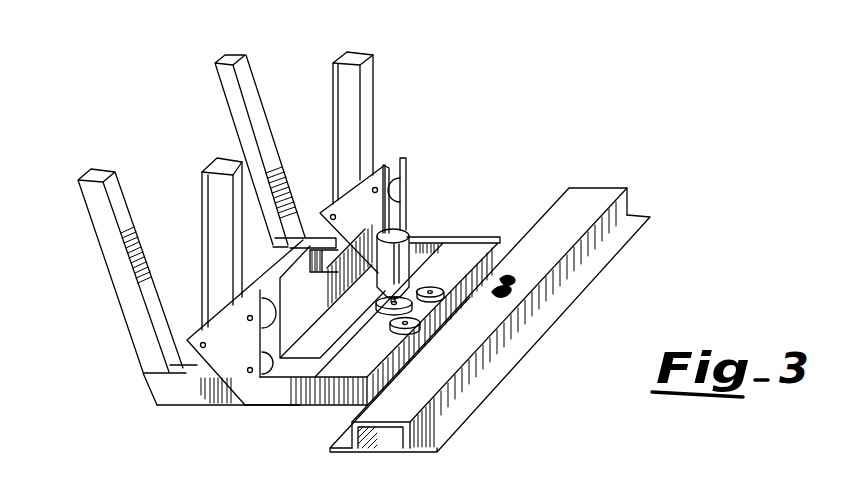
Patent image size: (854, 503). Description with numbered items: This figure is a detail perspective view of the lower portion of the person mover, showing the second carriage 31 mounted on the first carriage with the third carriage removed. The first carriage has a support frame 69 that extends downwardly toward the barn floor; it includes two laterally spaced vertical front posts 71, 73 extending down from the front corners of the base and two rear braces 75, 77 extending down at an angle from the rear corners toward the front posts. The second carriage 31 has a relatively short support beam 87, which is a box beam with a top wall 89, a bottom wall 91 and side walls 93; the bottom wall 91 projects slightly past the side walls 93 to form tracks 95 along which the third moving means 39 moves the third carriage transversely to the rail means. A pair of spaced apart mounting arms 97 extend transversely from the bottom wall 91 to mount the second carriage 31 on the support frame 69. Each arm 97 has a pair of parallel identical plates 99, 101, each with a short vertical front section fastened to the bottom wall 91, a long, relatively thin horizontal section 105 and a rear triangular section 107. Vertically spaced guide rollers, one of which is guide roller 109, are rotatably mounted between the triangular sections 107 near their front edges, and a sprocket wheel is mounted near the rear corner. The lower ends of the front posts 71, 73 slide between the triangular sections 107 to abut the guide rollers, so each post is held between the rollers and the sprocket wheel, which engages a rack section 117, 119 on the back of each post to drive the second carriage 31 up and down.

The second carriage 31 is at (540, 388).
The third moving means 39 is at (548, 272).
The support frame 69 is at (108, 293).
The front post 71 is at (208, 226).
The front post 73 is at (372, 83).
The rear brace 75 is at (100, 233).
The rear brace 77 is at (217, 85).
The support beam 87 is at (563, 331).
The top wall 89 is at (592, 195).
The bottom wall 91 is at (394, 438).
The side walls 93 is at (622, 208).
The tracks 95 is at (643, 230).
The mounting arms 97 is at (436, 228).
The plate 99 is at (376, 162).
The plate 101 is at (405, 168).
The horizontal section 105 is at (343, 389).
The triangular section 107 is at (220, 355).
The guide roller 109 is at (400, 190).
The rack section 117 is at (202, 186).
The rack section 119 is at (333, 84).